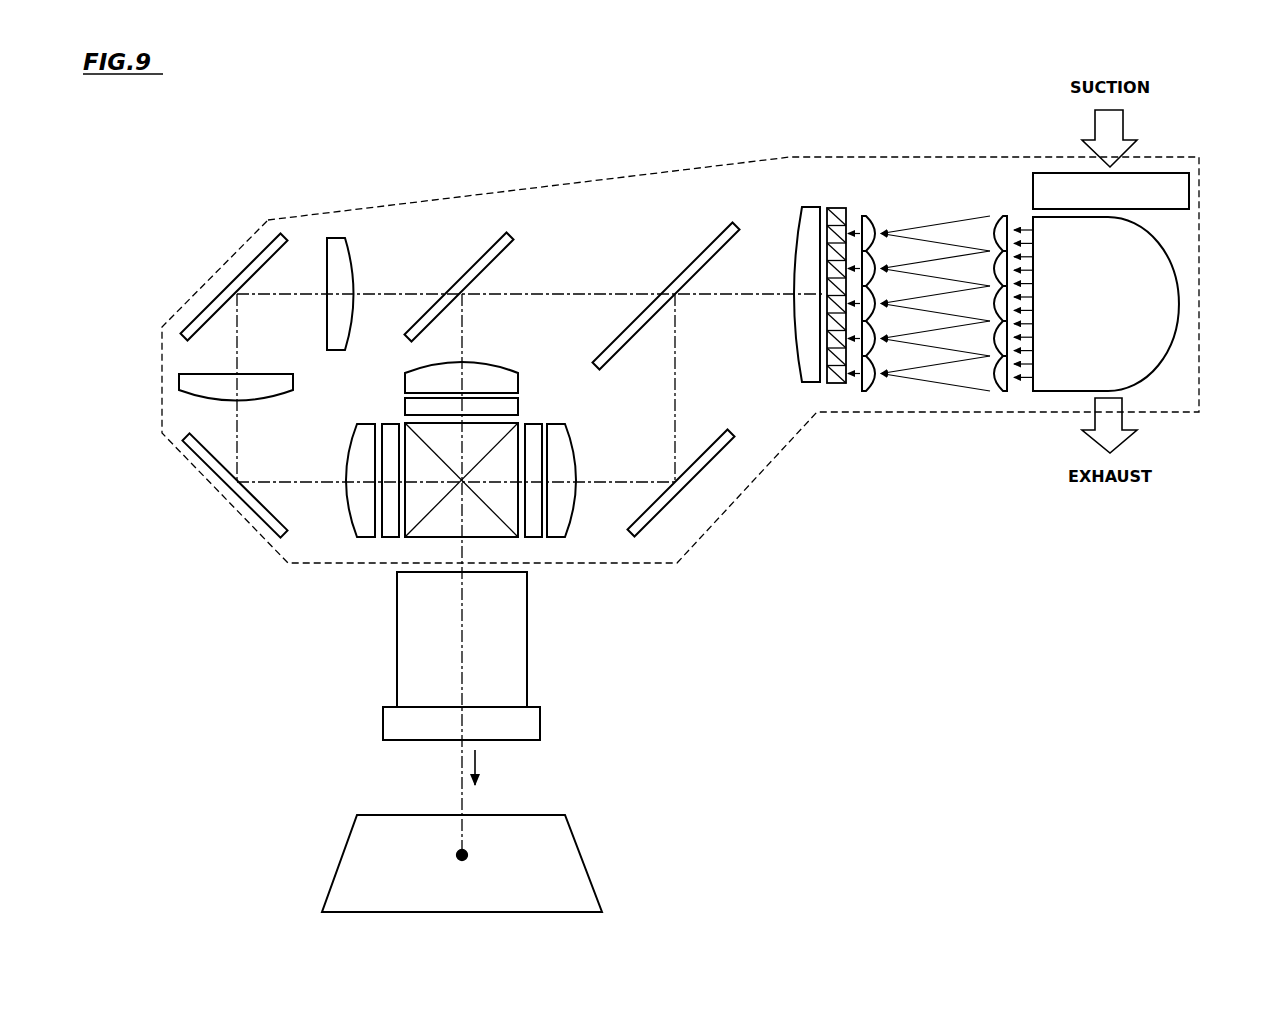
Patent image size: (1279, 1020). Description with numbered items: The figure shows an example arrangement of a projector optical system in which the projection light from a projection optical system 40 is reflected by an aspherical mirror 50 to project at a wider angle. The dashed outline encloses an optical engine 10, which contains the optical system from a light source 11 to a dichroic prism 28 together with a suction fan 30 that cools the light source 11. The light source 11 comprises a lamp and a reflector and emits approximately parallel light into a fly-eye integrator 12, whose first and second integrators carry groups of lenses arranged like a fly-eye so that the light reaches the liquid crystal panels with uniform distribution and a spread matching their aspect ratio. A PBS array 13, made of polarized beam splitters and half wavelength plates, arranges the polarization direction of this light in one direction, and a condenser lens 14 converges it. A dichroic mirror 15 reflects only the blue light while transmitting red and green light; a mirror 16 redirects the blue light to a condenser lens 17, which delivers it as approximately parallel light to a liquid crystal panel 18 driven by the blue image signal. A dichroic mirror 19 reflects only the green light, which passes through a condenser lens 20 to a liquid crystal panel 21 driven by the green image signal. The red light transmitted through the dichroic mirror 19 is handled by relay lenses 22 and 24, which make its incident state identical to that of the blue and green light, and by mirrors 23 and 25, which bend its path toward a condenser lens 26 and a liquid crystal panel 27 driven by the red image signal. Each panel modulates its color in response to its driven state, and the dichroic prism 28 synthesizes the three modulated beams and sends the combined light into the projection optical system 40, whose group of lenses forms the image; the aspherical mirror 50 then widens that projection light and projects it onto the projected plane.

The optical engine 10 is at (1180, 152).
The light source 11 is at (1170, 290).
The fly-eye integrator 12 is at (995, 208).
The PBS array 13 is at (836, 384).
The condenser lens 14 is at (803, 230).
The dichroic mirror 15 is at (694, 258).
The mirror 16 is at (706, 465).
The condenser lens 17 is at (567, 458).
The liquid crystal panel 18 is at (530, 432).
The dichroic mirror 19 is at (480, 265).
The condenser lens 20 is at (490, 370).
The liquid crystal panel 21 is at (403, 402).
The relay lens 22 is at (332, 228).
The mirror 23 is at (253, 264).
The relay lens 24 is at (256, 378).
The mirror 25 is at (227, 485).
The condenser lens 26 is at (362, 447).
The liquid crystal panel 27 is at (388, 432).
The dichroic prism 28 is at (420, 528).
The suction fan 30 is at (1048, 170).
The projection optical system 40 is at (408, 648).
The aspherical mirror 50 is at (353, 866).